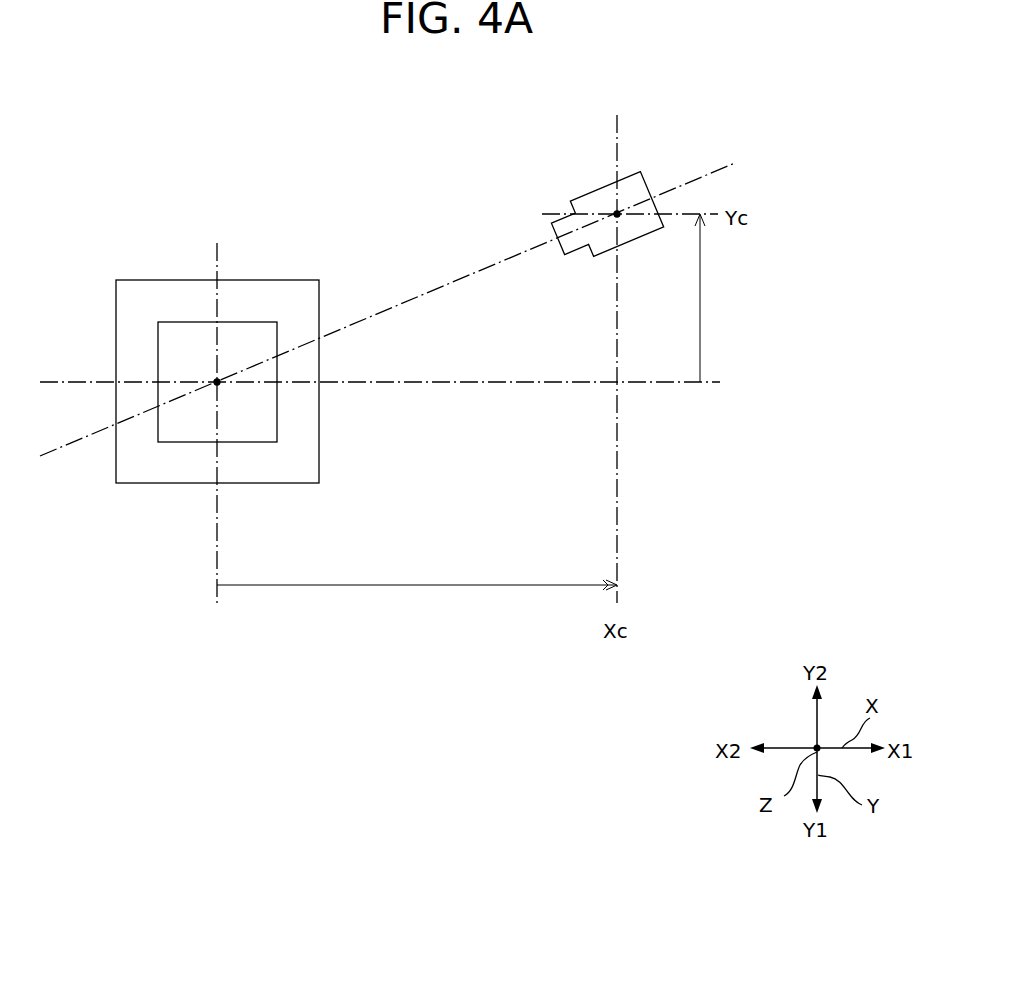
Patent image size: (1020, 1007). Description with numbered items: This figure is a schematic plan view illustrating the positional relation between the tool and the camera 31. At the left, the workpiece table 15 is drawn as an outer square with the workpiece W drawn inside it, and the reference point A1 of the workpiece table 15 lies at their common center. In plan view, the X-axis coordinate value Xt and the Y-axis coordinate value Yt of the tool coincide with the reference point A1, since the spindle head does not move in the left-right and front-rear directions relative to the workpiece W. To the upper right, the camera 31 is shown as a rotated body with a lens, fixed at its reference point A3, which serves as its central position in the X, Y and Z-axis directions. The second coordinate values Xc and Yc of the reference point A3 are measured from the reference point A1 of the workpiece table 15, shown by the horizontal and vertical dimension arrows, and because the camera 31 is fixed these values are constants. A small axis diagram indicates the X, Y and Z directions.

The workpiece table 15 is at (252, 280).
The camera 31 is at (633, 172).
The workpiece W is at (277, 420).
The reference point of the workpiece table A1 is at (217, 382).
The reference point of the camera A3 is at (617, 215).